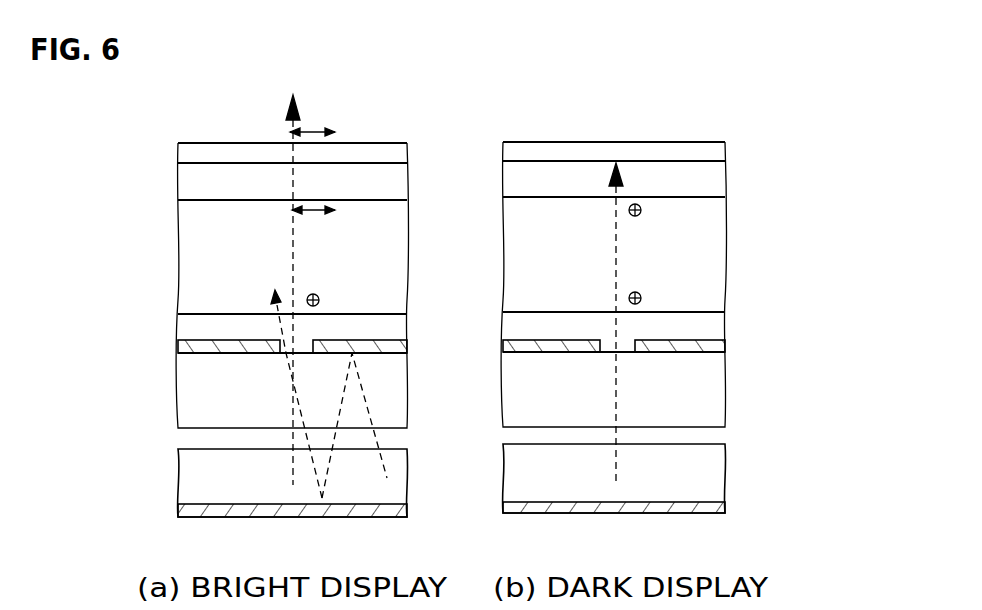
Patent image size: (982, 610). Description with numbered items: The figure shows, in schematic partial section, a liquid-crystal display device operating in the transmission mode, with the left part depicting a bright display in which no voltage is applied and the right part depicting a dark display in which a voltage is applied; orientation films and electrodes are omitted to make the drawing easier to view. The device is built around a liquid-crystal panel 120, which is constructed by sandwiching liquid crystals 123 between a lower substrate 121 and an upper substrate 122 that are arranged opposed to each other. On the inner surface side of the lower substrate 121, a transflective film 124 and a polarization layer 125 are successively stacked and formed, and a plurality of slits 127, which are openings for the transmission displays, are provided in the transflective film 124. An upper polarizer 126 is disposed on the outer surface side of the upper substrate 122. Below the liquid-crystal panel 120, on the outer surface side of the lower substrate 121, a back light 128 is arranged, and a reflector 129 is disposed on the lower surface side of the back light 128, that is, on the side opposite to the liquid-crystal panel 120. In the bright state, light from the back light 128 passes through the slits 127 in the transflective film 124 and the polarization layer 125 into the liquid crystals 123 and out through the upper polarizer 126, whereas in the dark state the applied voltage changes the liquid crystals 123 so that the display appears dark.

The liquid-crystal panel 120 is at (207, 143).
The lower substrate 121 is at (207, 409).
The upper substrate 122 is at (186, 184).
The liquid crystals 123 is at (188, 253).
The transflective film 124 is at (188, 349).
The polarization layer 125 is at (186, 322).
The upper polarizer 126 is at (186, 153).
The slits 127 is at (283, 353).
The back light 128 is at (188, 477).
The reflector 129 is at (185, 512).